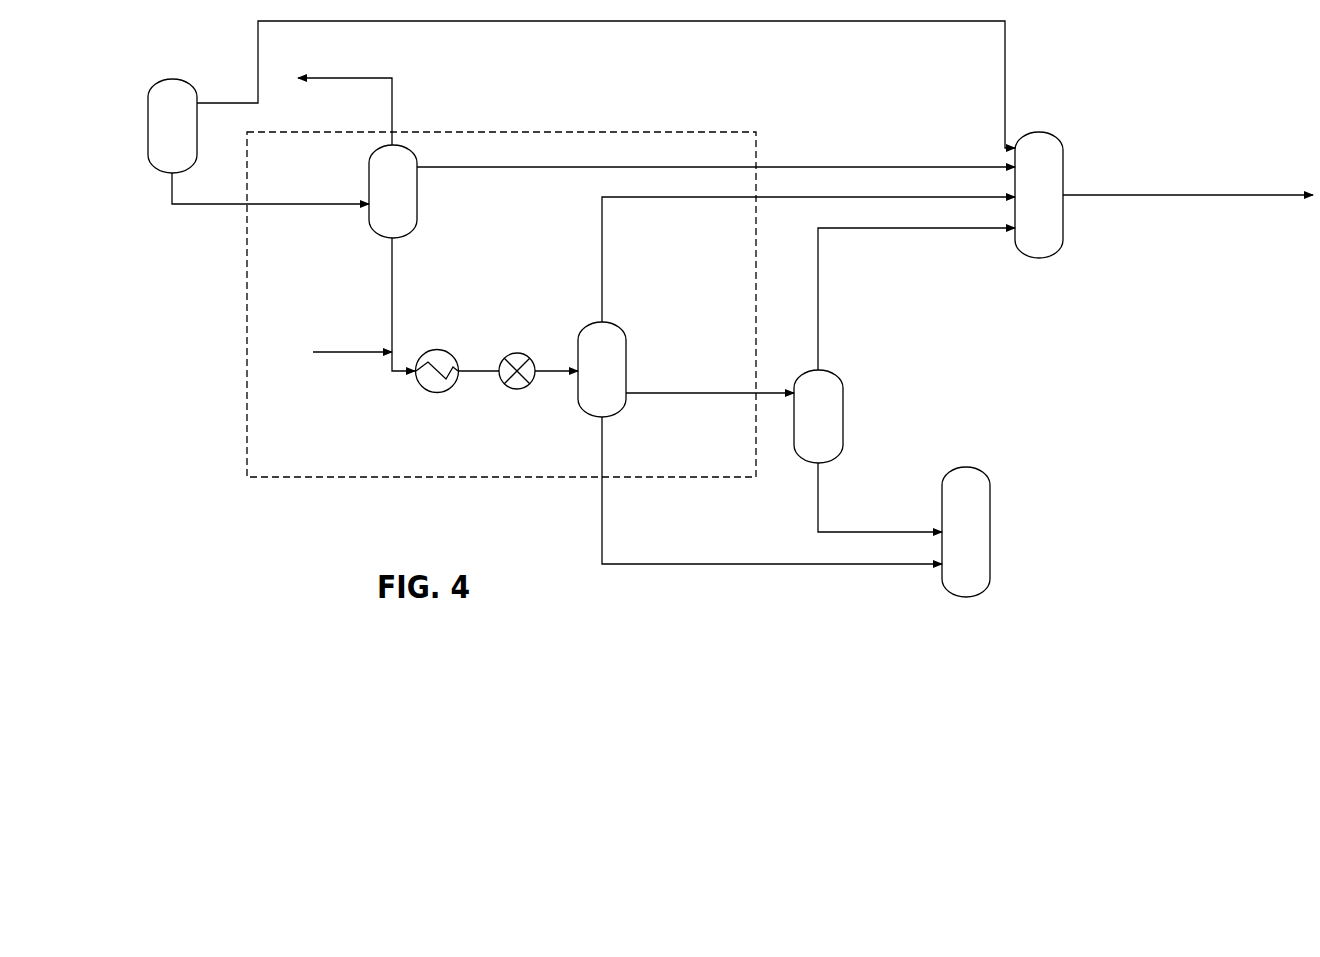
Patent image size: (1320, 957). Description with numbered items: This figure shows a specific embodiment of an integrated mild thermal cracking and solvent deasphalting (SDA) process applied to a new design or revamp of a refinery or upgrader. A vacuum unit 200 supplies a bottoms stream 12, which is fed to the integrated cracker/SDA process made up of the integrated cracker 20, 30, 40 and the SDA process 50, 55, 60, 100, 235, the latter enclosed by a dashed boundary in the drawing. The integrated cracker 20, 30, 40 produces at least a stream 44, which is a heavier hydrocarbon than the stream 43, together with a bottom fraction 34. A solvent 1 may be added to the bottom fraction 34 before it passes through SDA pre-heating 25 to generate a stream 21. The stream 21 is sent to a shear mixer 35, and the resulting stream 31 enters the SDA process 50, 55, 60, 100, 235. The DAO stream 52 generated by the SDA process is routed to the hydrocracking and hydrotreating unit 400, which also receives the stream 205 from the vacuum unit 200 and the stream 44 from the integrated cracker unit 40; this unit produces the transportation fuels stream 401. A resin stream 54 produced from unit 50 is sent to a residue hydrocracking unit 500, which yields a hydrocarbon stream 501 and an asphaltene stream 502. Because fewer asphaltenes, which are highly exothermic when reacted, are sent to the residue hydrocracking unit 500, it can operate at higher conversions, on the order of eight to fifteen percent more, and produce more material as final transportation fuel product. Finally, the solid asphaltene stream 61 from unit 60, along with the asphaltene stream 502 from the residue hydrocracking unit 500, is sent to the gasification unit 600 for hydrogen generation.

The vacuum unit 200 is at (133, 132).
The stream from the vacuum unit 205 is at (606, 84).
The bottoms stream 12 is at (270, 188).
The integrated cracker 20 is at (445, 191).
The integrated cracker 30 is at (445, 191).
The integrated cracker 40 is at (522, 217).
The stream 43 is at (345, 111).
The stream 44 is at (716, 150).
The bottom fraction 34 is at (385, 304).
The solvent 1 is at (352, 333).
The SDA pre-heating 25 is at (452, 424).
The stream 21 is at (479, 355).
The shear mixer 35 is at (530, 424).
The stream 31 is at (556, 352).
The SDA process unit 50 is at (689, 351).
The SDA process unit 55 is at (689, 351).
The SDA process unit 60 is at (689, 351).
The SDA process unit 100 is at (689, 351).
The SDA process unit 235 is at (800, 310).
The DAO stream 52 is at (808, 259).
The resin stream 54 is at (710, 410).
The residue hydrocracking unit 500 is at (912, 426).
The hydrocarbon stream 501 is at (916, 299).
The hydrocracking and hydrotreating unit 400 is at (1117, 172).
The transportation fuels stream 401 is at (1188, 178).
The asphaltene stream 502 is at (880, 497).
The solid asphaltene stream 61 is at (772, 491).
The gasification unit 600 is at (1058, 524).